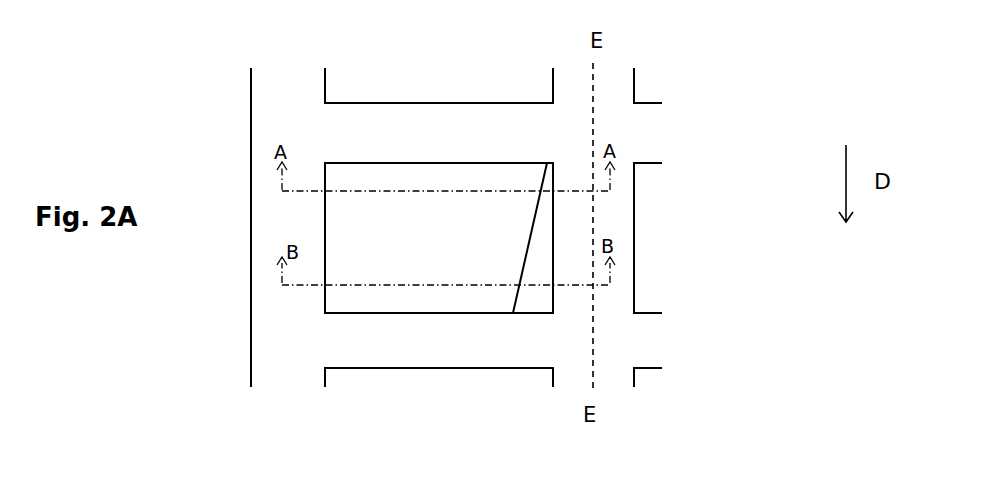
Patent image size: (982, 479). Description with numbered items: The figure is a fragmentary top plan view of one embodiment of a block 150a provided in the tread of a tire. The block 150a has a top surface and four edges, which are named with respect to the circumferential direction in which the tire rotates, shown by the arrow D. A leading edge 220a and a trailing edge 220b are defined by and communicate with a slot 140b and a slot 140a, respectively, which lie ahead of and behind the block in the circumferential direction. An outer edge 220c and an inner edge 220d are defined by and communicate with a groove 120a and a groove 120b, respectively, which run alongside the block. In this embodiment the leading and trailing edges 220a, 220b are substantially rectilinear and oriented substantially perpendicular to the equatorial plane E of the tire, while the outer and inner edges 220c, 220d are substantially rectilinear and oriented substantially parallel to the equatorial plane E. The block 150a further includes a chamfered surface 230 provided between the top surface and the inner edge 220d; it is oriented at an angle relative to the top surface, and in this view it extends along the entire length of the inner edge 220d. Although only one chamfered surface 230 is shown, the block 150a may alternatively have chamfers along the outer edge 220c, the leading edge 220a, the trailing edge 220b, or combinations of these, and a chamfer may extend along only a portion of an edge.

The groove 120a is at (286, 380).
The groove 120b is at (613, 387).
The slot 140a is at (476, 152).
The slot 140b is at (478, 362).
The block 150a is at (470, 257).
The leading edge 220a is at (374, 313).
The trailing edge 220b is at (511, 163).
The outer edge 220c is at (325, 231).
The inner edge 220d is at (553, 232).
The chamfered surface 230 is at (532, 302).